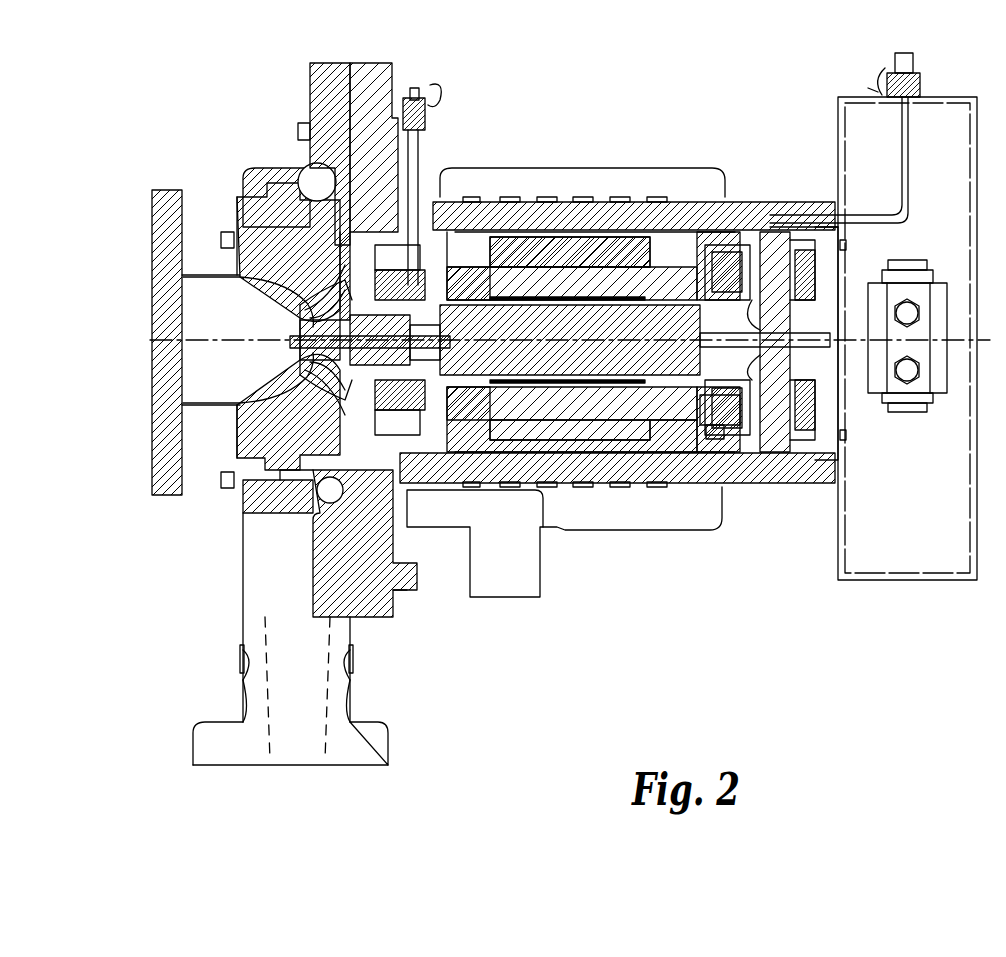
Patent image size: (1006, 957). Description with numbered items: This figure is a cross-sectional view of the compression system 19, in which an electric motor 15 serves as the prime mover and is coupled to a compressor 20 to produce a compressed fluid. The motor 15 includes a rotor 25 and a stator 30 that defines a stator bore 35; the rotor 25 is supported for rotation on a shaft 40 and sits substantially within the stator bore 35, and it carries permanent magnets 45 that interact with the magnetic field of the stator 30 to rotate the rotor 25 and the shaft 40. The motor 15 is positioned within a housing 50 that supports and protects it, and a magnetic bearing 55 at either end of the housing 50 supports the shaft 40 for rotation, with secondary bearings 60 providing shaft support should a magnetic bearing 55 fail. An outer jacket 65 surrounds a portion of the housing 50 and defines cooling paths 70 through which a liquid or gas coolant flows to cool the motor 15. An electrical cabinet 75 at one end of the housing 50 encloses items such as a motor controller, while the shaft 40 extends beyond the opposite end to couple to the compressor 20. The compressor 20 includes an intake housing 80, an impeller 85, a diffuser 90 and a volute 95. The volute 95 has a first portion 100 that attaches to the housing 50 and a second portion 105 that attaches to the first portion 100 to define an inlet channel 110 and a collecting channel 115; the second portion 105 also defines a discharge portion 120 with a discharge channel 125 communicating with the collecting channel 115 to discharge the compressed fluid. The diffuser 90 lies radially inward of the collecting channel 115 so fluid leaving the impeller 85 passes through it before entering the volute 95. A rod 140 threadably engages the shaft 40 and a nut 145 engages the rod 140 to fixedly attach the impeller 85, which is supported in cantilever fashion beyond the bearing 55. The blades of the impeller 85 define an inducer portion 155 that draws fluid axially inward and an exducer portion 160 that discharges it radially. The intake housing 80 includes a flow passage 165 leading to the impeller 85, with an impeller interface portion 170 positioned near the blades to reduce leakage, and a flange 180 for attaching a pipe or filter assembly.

The motor 15 is at (748, 158).
The compression system 19 is at (718, 660).
The compressor 20 is at (180, 536).
The rotor 25 is at (662, 487).
The stator 30 is at (700, 270).
The stator bore 35 is at (465, 290).
The shaft 40 is at (640, 250).
The permanent magnets 45 is at (597, 237).
The housing 50 is at (760, 485).
The bearing 55 is at (430, 240).
The secondary bearings 60 is at (425, 180).
The outer jacket 65 is at (640, 168).
The cooling paths 70 is at (530, 198).
The electrical cabinet 75 is at (945, 97).
The intake housing 80 is at (240, 485).
The impeller 85 is at (300, 345).
The diffuser 90 is at (305, 180).
The volute 95 is at (346, 55).
The first portion 100 is at (375, 90).
The second portion 105 is at (330, 90).
The inlet channel 110 is at (325, 500).
The collecting channel 115 is at (290, 167).
The discharge portion 120 is at (258, 630).
The discharge channel 125 is at (270, 764).
The rod 140 is at (470, 495).
The nut 145 is at (300, 330).
The inducer portion 155 is at (305, 370).
The exducer portion 160 is at (300, 245).
The flow passage 165 is at (240, 292).
The impeller interface portion 170 is at (268, 412).
The flange 180 is at (152, 212).